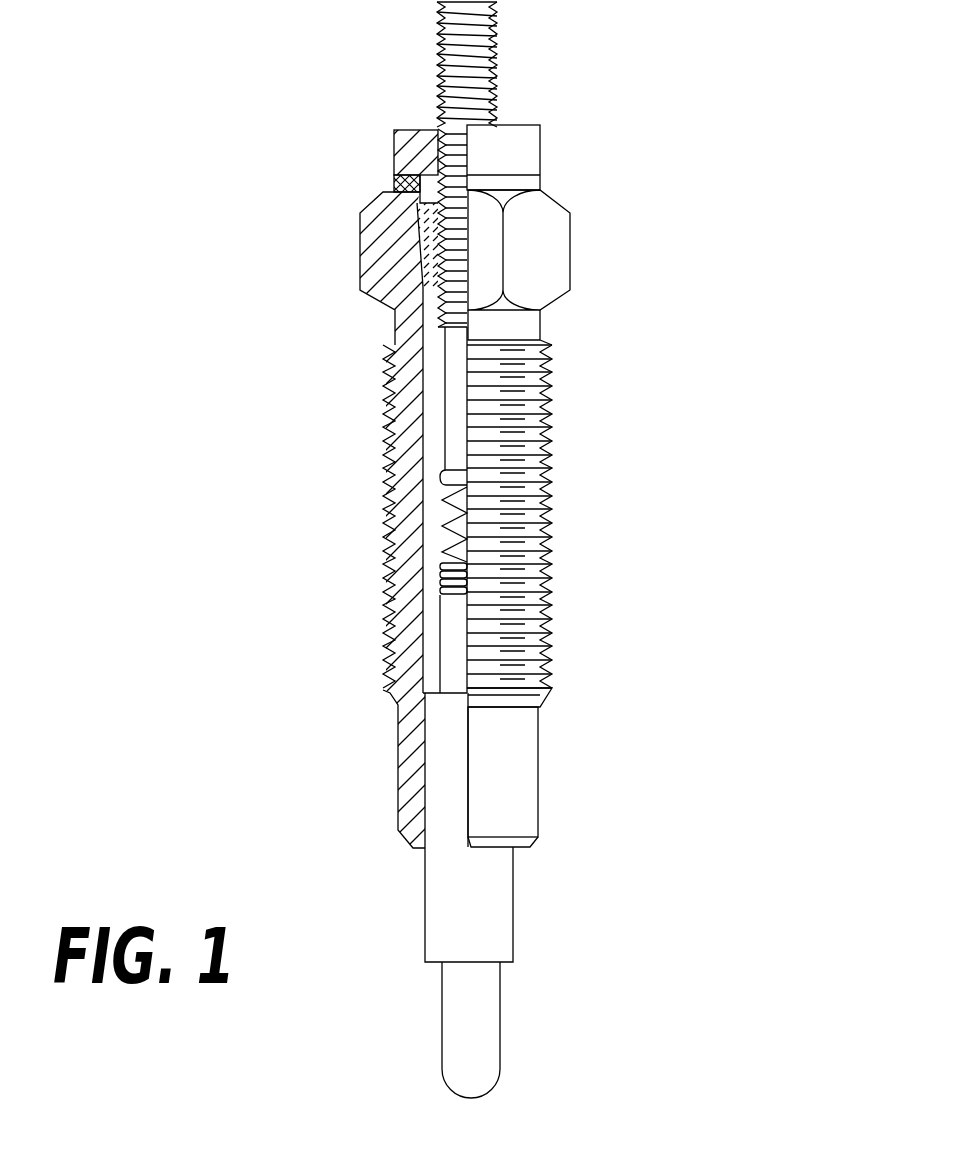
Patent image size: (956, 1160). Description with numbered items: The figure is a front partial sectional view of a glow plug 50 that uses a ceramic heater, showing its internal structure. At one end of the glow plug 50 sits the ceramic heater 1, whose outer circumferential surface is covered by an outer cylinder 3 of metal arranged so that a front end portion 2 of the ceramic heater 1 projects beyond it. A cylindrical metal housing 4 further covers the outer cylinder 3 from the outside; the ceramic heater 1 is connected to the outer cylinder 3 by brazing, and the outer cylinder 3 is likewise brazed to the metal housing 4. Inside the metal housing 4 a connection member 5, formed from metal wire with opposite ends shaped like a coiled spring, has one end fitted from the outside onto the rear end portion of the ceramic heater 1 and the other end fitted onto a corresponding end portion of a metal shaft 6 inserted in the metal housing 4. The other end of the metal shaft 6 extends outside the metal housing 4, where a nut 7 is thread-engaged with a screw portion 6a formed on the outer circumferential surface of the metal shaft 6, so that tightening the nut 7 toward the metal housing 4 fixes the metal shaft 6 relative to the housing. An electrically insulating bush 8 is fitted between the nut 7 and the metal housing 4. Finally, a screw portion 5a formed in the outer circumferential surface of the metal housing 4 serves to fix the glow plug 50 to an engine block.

The ceramic heater 1 is at (568, 1040).
The front end portion 2 is at (450, 1030).
The outer cylinder 3 is at (505, 905).
The metal housing 4 is at (527, 778).
The connection member 5 is at (443, 571).
The screw portion 5a is at (557, 622).
The metal shaft 6 is at (493, 50).
The screw portion 6a is at (490, 82).
The nut 7 is at (528, 160).
The electrically insulating bush 8 is at (392, 182).
The glow plug 50 is at (599, 551).